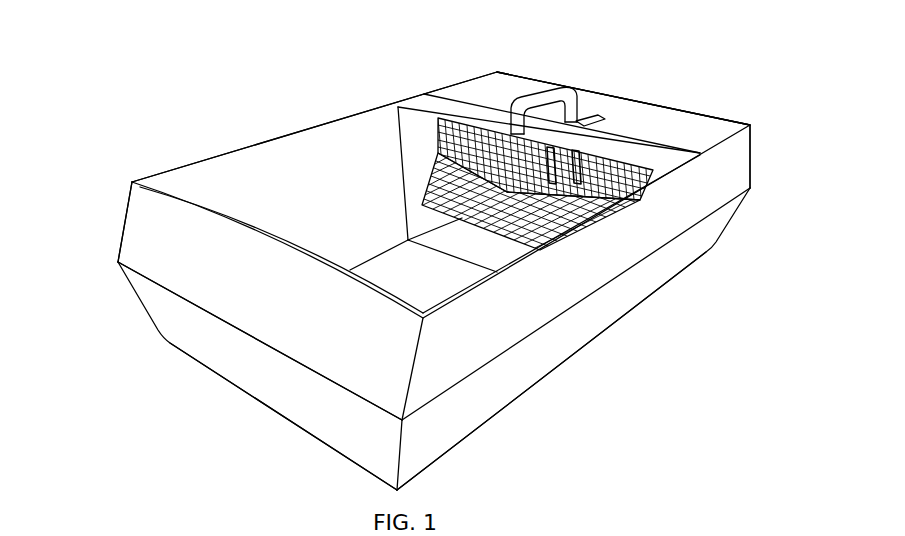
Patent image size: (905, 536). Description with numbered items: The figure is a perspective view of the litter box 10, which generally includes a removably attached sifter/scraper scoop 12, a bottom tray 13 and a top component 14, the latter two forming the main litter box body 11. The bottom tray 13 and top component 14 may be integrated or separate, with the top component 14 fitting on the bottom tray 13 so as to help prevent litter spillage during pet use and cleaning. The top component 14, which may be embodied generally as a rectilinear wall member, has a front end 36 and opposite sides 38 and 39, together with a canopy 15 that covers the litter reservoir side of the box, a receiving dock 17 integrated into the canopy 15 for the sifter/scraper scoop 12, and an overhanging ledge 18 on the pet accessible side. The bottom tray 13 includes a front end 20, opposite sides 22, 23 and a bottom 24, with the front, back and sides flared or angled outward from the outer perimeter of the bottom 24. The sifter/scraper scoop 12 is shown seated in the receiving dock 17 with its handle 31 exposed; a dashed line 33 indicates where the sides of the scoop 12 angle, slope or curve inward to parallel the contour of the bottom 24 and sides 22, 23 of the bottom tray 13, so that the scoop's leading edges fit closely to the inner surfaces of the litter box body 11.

The litter box 10 is at (284, 52).
The litter box body 11 is at (760, 185).
The sifter/scraper scoop 12 is at (423, 96).
The bottom tray 13 is at (143, 307).
The top component 14 is at (122, 218).
The canopy 15 is at (700, 125).
The receiving dock 17 is at (585, 118).
The overhanging ledge 18 is at (132, 182).
The front end 20 is at (252, 387).
The side 22 is at (311, 238).
The side 23 is at (561, 357).
The bottom 24 is at (398, 282).
The handle 31 is at (560, 90).
The dashed line 33 is at (438, 153).
The front end 36 is at (231, 296).
The side 38 is at (243, 170).
The side 39 is at (496, 312).